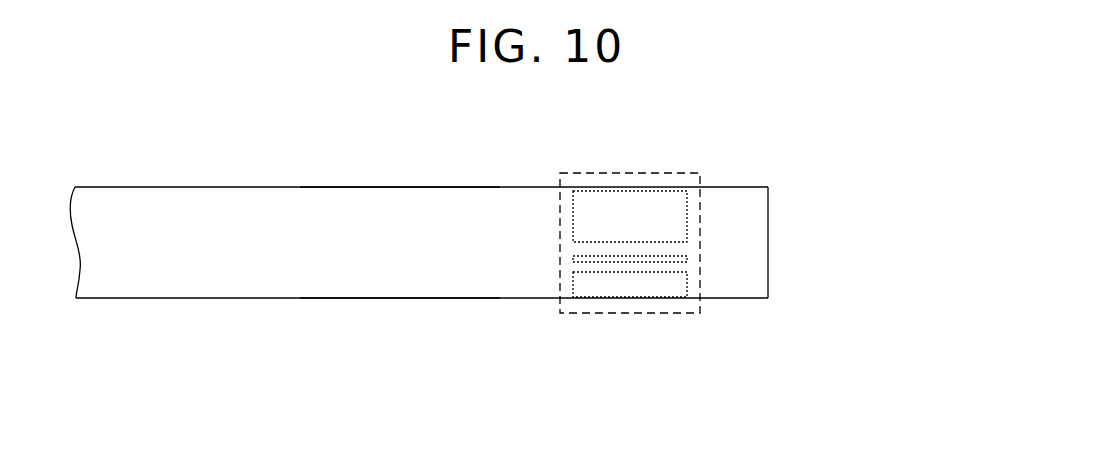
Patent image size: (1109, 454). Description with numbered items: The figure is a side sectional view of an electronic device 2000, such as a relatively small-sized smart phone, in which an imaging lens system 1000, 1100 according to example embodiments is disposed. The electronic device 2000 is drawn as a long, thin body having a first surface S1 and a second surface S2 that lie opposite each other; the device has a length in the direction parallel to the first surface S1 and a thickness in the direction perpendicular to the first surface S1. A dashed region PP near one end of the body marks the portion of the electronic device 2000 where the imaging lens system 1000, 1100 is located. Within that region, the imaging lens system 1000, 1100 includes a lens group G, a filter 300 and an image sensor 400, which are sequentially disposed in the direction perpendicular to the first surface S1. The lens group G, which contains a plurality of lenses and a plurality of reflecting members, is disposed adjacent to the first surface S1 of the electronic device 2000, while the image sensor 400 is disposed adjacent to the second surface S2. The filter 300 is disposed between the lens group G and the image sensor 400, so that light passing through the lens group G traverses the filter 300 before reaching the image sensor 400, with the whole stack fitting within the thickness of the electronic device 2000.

The electronic device 2000 is at (262, 187).
The first surface S1 is at (371, 186).
The second surface S2 is at (371, 300).
The pattern portion PP is at (651, 173).
The lens group G is at (687, 208).
The filter 300 is at (687, 256).
The image sensor 400 is at (687, 281).
The imaging lens system 1000 is at (785, 244).
The imaging lens system 1100 is at (835, 197).